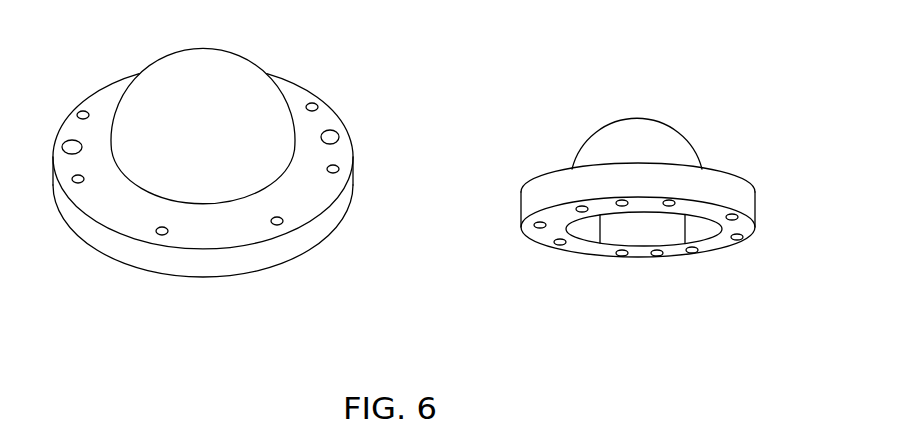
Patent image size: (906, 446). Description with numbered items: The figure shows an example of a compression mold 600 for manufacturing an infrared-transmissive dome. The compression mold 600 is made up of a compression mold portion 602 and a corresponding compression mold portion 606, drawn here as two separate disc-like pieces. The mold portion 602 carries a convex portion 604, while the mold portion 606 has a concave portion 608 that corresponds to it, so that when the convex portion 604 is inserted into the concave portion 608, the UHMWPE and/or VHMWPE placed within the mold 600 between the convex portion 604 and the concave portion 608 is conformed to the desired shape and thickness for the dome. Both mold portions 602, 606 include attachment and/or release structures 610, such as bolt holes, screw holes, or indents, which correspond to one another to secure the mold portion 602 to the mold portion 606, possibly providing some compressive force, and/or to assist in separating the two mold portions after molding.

The compression mold 600 is at (674, 255).
The compression mold portion 602 is at (300, 250).
The convex portion 604 is at (237, 57).
The compression mold portion 606 is at (756, 197).
The concave portion 608 is at (667, 239).
The attachment and/or release structures 610 is at (336, 132).